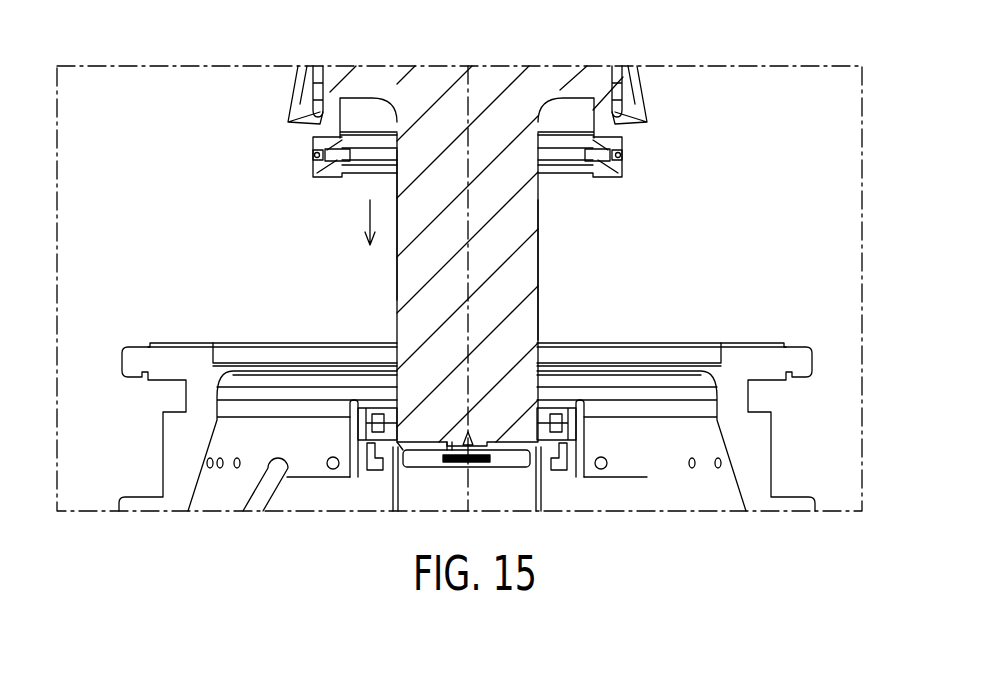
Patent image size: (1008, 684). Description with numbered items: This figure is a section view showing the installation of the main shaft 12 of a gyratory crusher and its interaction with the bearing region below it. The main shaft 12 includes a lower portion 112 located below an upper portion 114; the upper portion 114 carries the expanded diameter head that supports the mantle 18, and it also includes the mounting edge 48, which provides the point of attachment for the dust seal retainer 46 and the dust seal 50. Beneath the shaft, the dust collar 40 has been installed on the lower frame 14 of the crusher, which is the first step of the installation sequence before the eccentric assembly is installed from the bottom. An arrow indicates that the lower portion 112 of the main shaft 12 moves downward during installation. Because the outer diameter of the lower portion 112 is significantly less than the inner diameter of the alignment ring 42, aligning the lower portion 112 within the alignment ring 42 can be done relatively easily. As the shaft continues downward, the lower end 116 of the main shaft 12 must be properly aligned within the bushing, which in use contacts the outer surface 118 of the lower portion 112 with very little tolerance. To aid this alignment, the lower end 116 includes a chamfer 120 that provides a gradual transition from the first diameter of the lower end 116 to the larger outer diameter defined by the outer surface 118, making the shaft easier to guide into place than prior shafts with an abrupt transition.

The main shaft 12 is at (522, 223).
The lower frame 14 is at (762, 449).
The mantle 18 is at (635, 103).
The dust collar 40 is at (585, 435).
The alignment ring 42 is at (575, 402).
The dust seal retainer 46 is at (627, 147).
The mounting edge 48 is at (332, 122).
The dust seal 50 is at (600, 170).
The lower portion 112 is at (412, 272).
The upper portion 114 is at (585, 87).
The lower end 116 is at (495, 442).
The outer surface 118 is at (538, 272).
The chamfer 120 is at (403, 442).